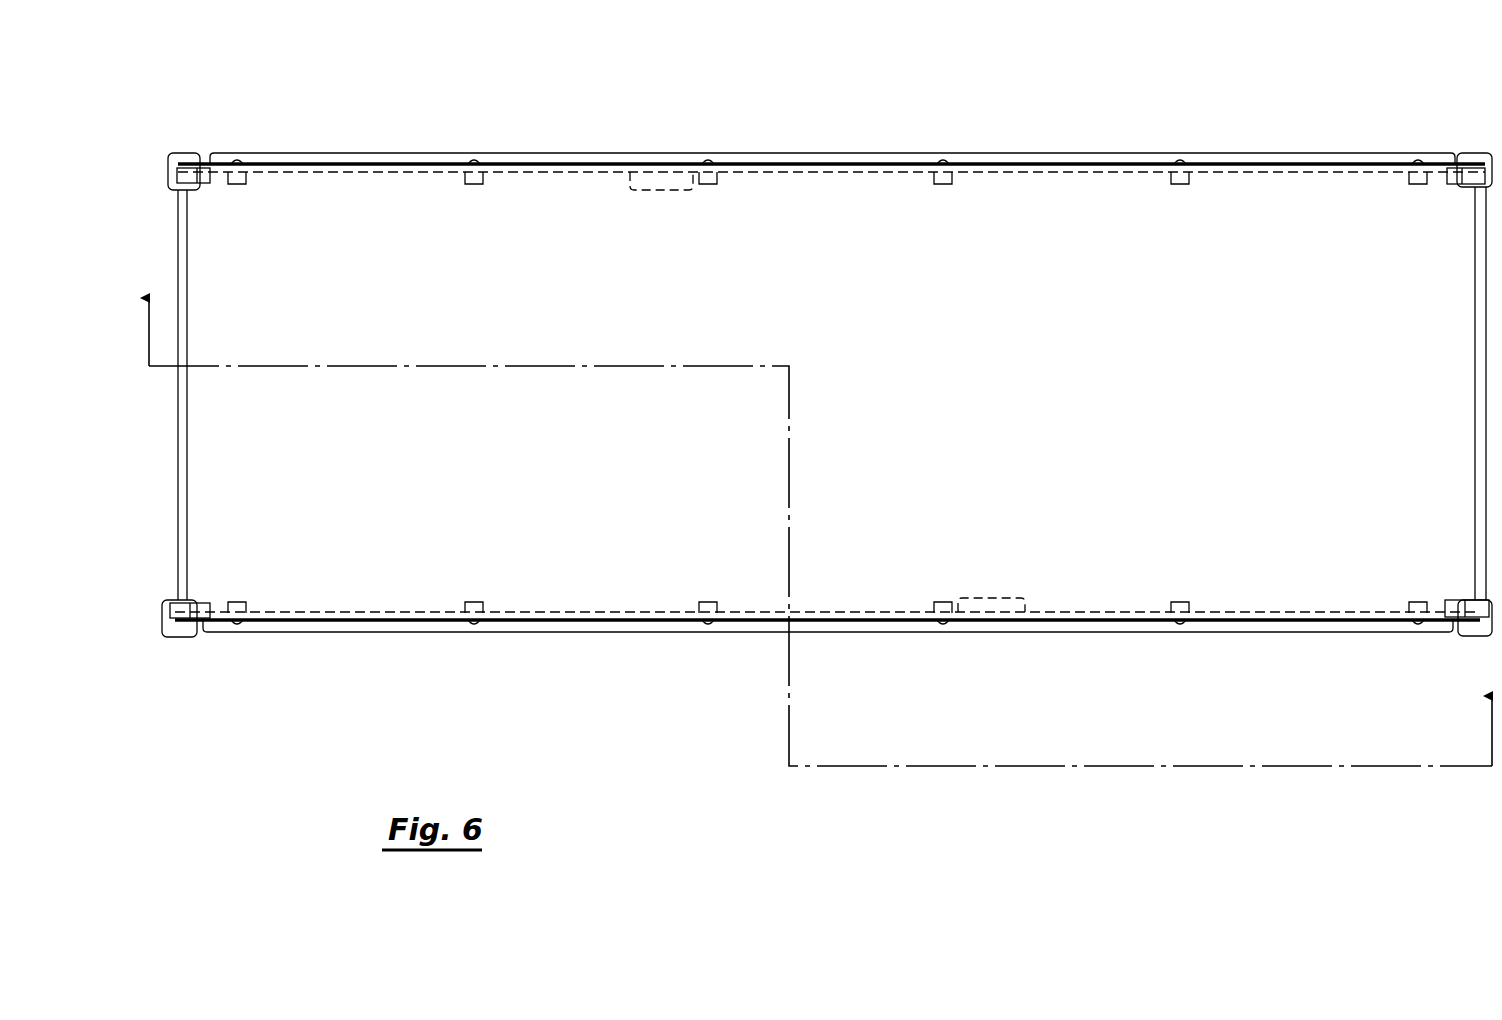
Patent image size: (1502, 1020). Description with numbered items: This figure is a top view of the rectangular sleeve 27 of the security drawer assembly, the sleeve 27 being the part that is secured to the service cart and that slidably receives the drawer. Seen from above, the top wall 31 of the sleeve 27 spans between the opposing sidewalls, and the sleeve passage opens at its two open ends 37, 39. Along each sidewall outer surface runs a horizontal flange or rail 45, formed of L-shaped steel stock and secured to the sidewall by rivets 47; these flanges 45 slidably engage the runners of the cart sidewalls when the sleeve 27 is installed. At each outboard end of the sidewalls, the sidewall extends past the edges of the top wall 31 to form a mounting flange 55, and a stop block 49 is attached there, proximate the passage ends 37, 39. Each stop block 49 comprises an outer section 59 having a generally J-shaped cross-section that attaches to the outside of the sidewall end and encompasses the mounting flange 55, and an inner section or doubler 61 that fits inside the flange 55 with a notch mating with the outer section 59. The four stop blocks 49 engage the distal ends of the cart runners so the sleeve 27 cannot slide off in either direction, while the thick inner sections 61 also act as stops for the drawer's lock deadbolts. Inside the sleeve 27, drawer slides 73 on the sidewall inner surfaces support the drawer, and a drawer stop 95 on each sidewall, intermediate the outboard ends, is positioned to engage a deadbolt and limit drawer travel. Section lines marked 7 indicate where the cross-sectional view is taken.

The section line 7- 7 is at (817, 551).
The rectangular sleeve 27 is at (827, 428).
The top wall 31 is at (1168, 380).
The open end 37 is at (187, 440).
The open end 39 is at (1475, 366).
The horizontal flange or rail 45 is at (823, 153).
The rivet 47 is at (475, 164).
The stop block 49 is at (190, 153).
The mounting flange 55 is at (195, 185).
The outer section 59 is at (1475, 153).
The inner section or doubler 61 is at (1450, 186).
The drawer slide 73 is at (1053, 172).
The drawer stop 95 is at (662, 190).